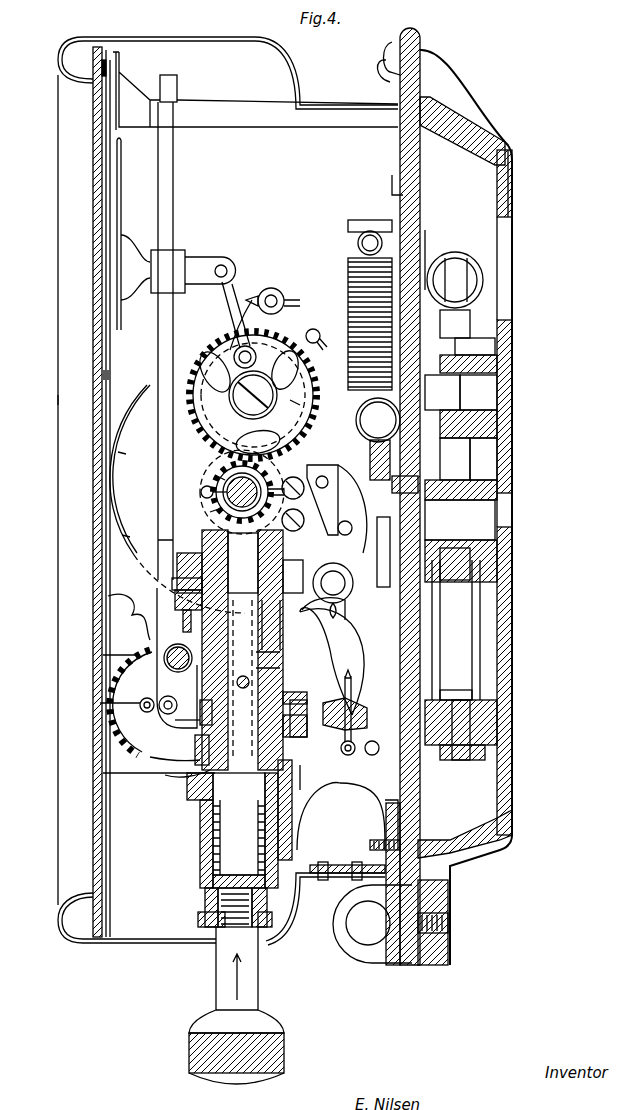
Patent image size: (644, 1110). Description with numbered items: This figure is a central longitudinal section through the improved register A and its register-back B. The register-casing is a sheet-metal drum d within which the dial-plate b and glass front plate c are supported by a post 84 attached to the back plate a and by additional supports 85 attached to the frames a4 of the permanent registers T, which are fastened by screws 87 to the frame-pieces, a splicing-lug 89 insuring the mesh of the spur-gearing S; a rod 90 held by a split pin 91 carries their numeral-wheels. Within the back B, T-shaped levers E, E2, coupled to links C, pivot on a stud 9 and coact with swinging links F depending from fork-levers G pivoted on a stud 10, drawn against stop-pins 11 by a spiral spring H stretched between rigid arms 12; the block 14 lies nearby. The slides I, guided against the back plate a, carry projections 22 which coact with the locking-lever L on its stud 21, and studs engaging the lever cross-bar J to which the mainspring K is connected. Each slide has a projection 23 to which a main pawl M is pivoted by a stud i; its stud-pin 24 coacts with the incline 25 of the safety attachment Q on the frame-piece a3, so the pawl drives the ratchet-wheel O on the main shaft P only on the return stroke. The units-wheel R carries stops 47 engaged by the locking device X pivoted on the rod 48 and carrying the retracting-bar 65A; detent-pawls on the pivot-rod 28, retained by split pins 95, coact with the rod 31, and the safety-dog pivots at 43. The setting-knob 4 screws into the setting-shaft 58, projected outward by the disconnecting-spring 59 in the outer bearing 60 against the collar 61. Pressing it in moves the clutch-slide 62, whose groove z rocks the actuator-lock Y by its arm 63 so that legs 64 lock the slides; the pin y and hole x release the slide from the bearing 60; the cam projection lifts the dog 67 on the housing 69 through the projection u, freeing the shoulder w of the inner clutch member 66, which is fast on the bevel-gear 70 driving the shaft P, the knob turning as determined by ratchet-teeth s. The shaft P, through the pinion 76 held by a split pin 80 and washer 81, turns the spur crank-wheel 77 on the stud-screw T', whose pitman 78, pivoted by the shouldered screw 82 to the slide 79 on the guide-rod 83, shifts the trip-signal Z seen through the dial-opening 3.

The sheet-metal drum d is at (158, 958).
The dial-opening 3 is at (100, 258).
The glass front plate c is at (104, 373).
The dial-plate b is at (109, 373).
The improved register A is at (39, 403).
The post 84 is at (255, 91).
The guide-rod 83 is at (174, 206).
The trip-signal Z is at (113, 187).
The slide 79 is at (168, 271).
The shouldered screw 82 is at (226, 266).
The pitman 78 is at (232, 308).
The stud-screw T' is at (253, 395).
The spur crank-wheel 77 is at (293, 409).
The main shaft P is at (242, 492).
The split pin 80 is at (201, 494).
The washer 81 is at (207, 468).
The pinion 76 is at (205, 512).
The units-wheel R is at (177, 499).
The stop 47 is at (134, 494).
The frame-piece a3 is at (271, 288).
The pivot-rod 28 is at (286, 296).
The split pin 95 is at (286, 303).
The rod 31 is at (313, 330).
The peripheral shoulder w is at (347, 225).
The mainspring K is at (358, 370).
The lever cross-bar J is at (362, 432).
The ratchet-wheel O is at (293, 475).
The safety attachment Q is at (303, 520).
The main pawl M is at (337, 509).
The stud-pin 24 is at (328, 480).
The locking-lever L is at (383, 548).
The back plate a is at (421, 194).
The register-back B is at (513, 392).
The slide I is at (416, 276).
The spiral spring H is at (462, 258).
The rigid arm 12 is at (455, 324).
The stop-pin 11 is at (468, 355).
The block 14 is at (442, 392).
The stud 10 is at (468, 406).
The fork-lever G is at (460, 469).
The stud 21 is at (405, 485).
The stud 9 is at (461, 541).
The swinging link F is at (455, 564).
The recessed lateral projection 22 is at (436, 595).
The T-shaped lever E is at (428, 640).
The T-shaped lever E2 is at (458, 674).
The link C is at (466, 762).
The bevel-gear 70 is at (217, 563).
The locking device X is at (242, 650).
The shouldered screw 43 is at (172, 585).
The dog 67 is at (175, 606).
The projection u is at (177, 658).
The spur-gearing S is at (129, 621).
The additional support 85 is at (125, 781).
The splicing-lug 89 is at (165, 683).
The screw 87 is at (112, 660).
The pin 65A is at (179, 695).
The split pin 91 is at (140, 706).
The permanent register T is at (81, 705).
The rod 90 is at (181, 723).
The circumferential groove z is at (204, 715).
The frame a4 is at (175, 750).
The pin y is at (187, 767).
The hole x is at (212, 746).
The housing 69 is at (294, 576).
The inner clutch member 66 is at (271, 625).
The pivot-rod 48 is at (262, 660).
The clutch-slide 62 is at (270, 685).
The horizontal stud i is at (333, 583).
The projection 23 is at (323, 620).
The leg 64 is at (323, 629).
The actuator-lock Y is at (335, 661).
The forwardly-projecting arm 63 is at (328, 712).
The ratchet-teeth s is at (292, 752).
The incline 25 is at (319, 776).
The setting-shaft 58 is at (239, 824).
The disconnecting-spring 59 is at (200, 840).
The outer bearing 60 is at (205, 873).
The collar 61 is at (198, 916).
The knob 4 is at (236, 1018).